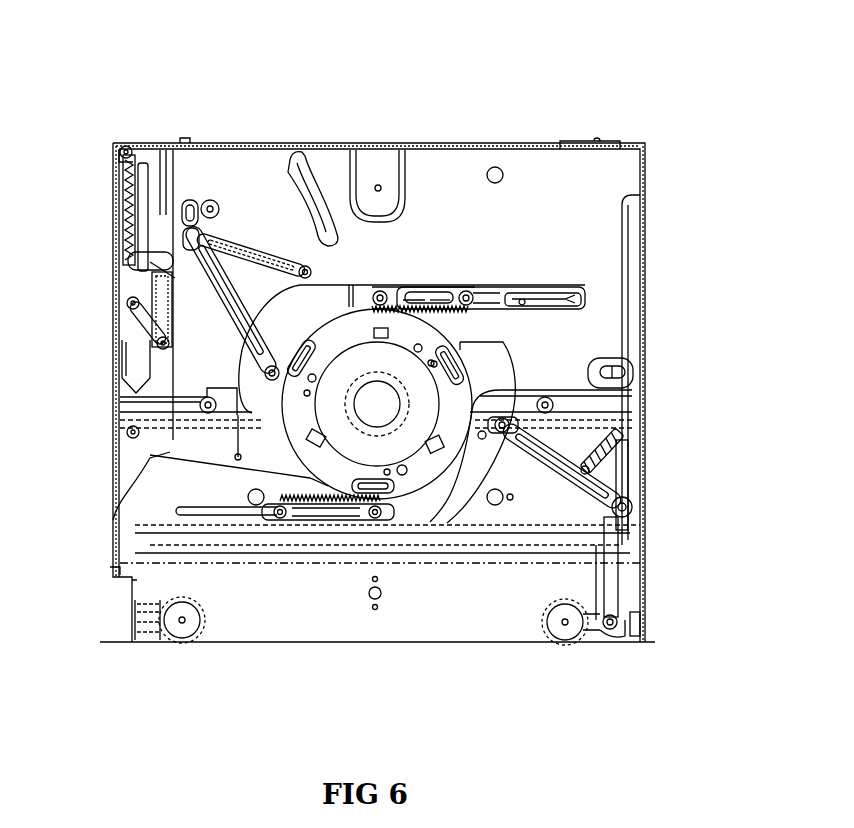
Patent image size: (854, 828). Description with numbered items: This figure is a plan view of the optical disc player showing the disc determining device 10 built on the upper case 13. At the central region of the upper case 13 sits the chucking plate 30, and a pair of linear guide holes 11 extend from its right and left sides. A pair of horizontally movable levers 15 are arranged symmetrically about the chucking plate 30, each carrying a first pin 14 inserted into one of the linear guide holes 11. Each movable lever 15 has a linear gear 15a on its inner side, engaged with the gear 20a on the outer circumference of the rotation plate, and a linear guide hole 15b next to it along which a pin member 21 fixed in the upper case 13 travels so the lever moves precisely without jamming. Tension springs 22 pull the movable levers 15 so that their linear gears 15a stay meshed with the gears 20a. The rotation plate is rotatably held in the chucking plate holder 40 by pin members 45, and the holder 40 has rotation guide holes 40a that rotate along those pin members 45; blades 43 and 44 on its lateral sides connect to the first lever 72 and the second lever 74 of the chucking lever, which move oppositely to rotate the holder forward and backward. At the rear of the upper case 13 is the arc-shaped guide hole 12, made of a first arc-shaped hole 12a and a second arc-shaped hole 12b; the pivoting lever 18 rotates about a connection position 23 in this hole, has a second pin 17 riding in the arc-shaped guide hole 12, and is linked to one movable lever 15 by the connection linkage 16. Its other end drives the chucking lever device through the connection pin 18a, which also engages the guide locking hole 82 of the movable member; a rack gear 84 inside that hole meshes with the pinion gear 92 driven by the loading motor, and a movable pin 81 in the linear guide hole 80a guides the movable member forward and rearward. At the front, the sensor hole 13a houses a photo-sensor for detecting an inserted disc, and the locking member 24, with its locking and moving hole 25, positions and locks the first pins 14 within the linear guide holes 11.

The disc determining device 10 is at (330, 92).
The linear guide holes 11 is at (113, 423).
The arc-shaped guide hole 12 is at (318, 88).
The first arc-shaped hole 12a is at (325, 240).
The second arc-shaped hole 12b is at (292, 235).
The upper case 13 is at (602, 636).
The sensor hole 13a is at (392, 600).
The first pins 14 is at (113, 460).
The horizontally movable levers 15 is at (113, 388).
The linear gear 15a is at (470, 290).
The linear guide hole 15b is at (453, 290).
The connection linkage 16 is at (222, 205).
The second pin 17 is at (339, 262).
The pivoting lever 18 is at (241, 197).
The connection pin 18a is at (164, 178).
The gear 20a is at (408, 500).
The pin members 21 is at (372, 288).
The tension springs 22 is at (520, 290).
The connection position 23 is at (218, 200).
The locking member 24 is at (622, 483).
The locking and moving hole 25 is at (633, 628).
The chucking plate 30 is at (393, 415).
The chucking plate holder 40 is at (355, 323).
The rotation guide holes 40a is at (560, 348).
The blade 43 is at (113, 500).
The blade 44 is at (465, 384).
The pin members 45 is at (458, 355).
The first lever 72 is at (122, 333).
The second lever 74 is at (636, 257).
The linear guide hole 80a is at (125, 289).
The movable pin 81 is at (113, 360).
The guide locking hole 82 is at (118, 203).
The rack gear 84 is at (100, 176).
The pinion gear 92 is at (115, 263).